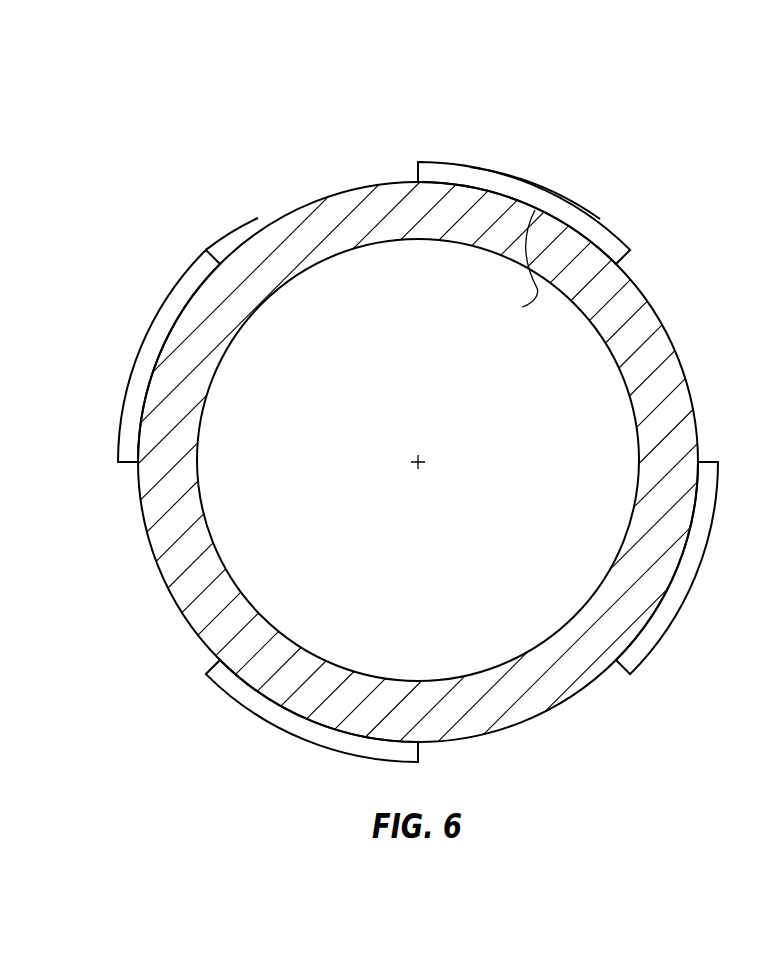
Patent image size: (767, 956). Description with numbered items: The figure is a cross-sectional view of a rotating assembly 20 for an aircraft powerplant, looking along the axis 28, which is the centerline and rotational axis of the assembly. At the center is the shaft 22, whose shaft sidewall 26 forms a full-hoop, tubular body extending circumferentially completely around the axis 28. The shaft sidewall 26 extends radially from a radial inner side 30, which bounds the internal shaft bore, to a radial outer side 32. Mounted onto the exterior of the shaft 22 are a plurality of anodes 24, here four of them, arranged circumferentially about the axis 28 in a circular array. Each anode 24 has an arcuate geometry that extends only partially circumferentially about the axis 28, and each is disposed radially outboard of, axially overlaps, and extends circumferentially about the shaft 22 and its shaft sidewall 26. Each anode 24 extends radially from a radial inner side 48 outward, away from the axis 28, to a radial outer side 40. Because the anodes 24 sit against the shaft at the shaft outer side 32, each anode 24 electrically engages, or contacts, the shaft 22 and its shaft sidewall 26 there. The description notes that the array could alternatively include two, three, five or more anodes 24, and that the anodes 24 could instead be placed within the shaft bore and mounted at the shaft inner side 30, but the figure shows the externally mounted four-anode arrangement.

The rotating assembly 20 is at (378, 399).
The shaft 22 is at (343, 190).
The anode 24 is at (507, 166).
The shaft sidewall 26 is at (290, 240).
The axis 28 is at (421, 458).
The radial inner side 30 is at (287, 284).
The radial outer side 32 is at (243, 246).
The radial outer side 40 is at (562, 199).
The radial inner side 48 is at (516, 266).